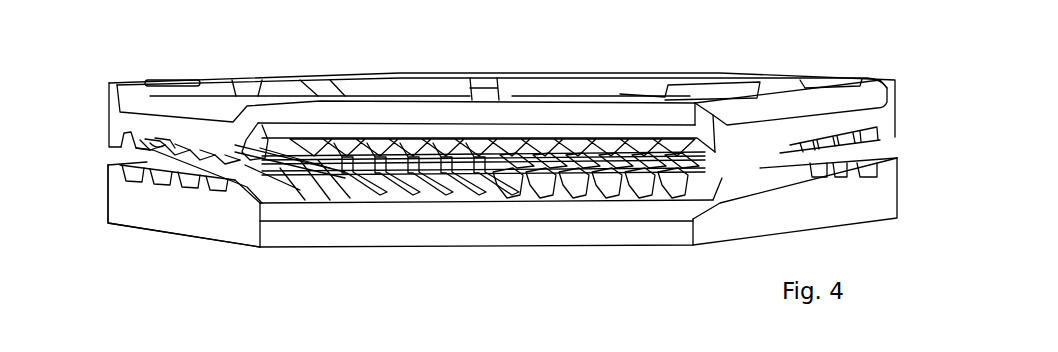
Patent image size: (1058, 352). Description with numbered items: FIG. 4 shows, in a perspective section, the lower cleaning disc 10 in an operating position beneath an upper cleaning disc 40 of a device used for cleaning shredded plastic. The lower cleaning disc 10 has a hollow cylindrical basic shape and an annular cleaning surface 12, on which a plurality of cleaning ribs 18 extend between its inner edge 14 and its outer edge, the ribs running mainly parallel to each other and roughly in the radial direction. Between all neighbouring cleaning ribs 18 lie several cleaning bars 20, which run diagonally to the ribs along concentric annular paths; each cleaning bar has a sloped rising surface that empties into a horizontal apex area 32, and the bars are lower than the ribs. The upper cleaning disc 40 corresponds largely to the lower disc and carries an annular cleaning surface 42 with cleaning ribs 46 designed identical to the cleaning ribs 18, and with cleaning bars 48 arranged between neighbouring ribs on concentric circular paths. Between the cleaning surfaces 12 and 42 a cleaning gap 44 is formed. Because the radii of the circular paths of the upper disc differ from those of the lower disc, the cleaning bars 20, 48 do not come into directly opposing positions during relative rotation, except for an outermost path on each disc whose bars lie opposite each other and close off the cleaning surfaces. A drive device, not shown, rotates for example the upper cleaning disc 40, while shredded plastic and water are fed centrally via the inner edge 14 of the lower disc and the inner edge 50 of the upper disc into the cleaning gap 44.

The lower cleaning disc 10 is at (177, 218).
The annular cleaning surface 12 is at (172, 167).
The inner edge 14 is at (527, 238).
The cleaning ribs 18 is at (384, 163).
The cleaning bars 20 is at (417, 130).
The horizontal apex area 32 is at (341, 344).
The upper cleaning disc 40 is at (117, 128).
The annular cleaning surface 42 is at (158, 152).
The cleaning gap 44 is at (860, 150).
The cleaning ribs 46 is at (260, 153).
The cleaning bars 48 is at (134, 147).
The inner edge 50 is at (543, 127).